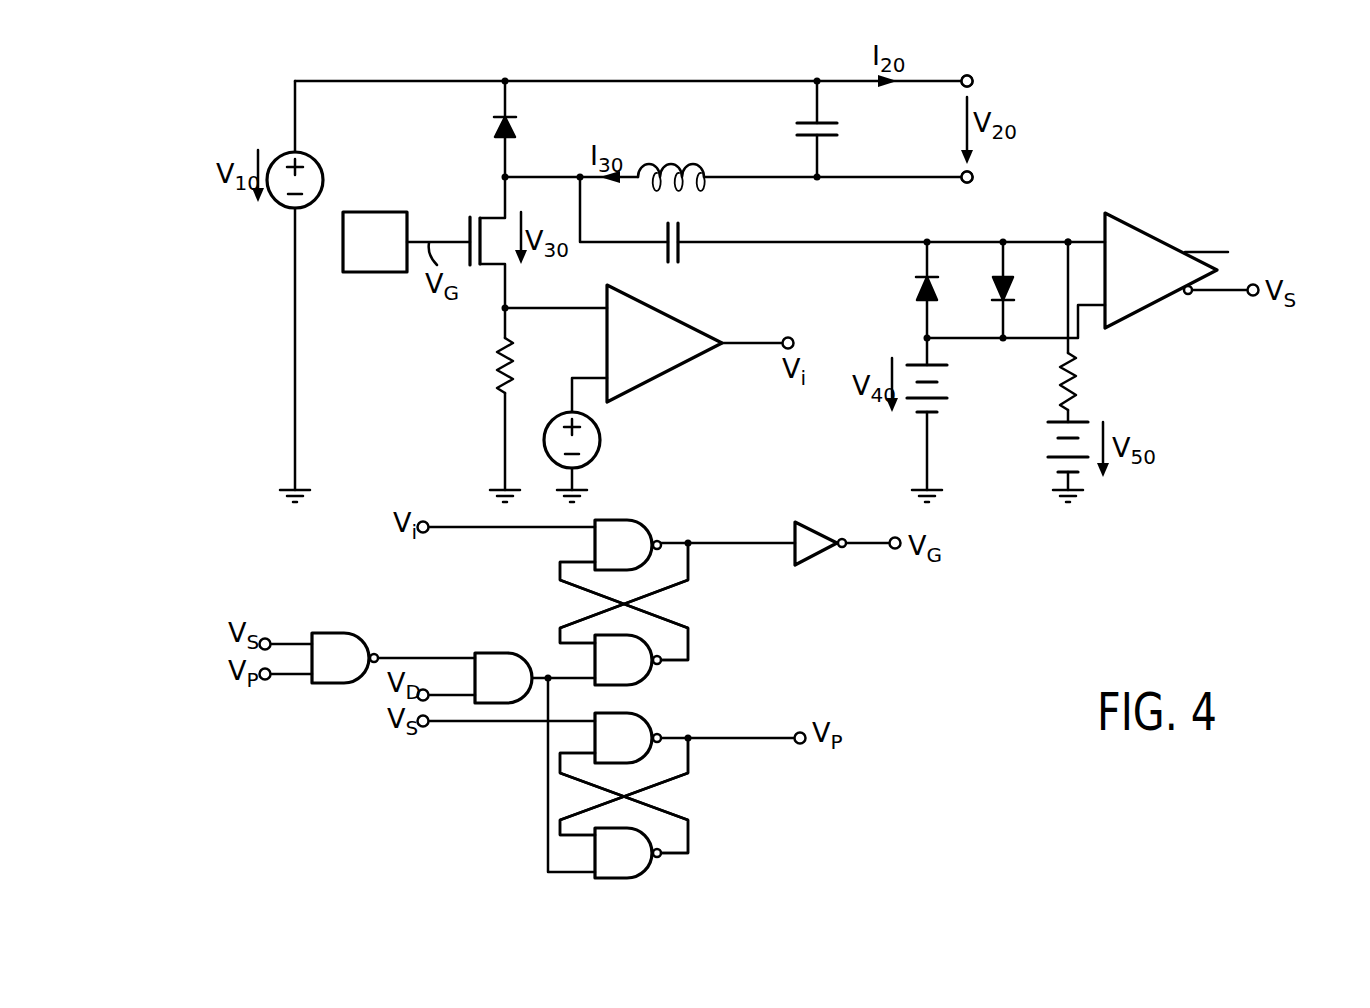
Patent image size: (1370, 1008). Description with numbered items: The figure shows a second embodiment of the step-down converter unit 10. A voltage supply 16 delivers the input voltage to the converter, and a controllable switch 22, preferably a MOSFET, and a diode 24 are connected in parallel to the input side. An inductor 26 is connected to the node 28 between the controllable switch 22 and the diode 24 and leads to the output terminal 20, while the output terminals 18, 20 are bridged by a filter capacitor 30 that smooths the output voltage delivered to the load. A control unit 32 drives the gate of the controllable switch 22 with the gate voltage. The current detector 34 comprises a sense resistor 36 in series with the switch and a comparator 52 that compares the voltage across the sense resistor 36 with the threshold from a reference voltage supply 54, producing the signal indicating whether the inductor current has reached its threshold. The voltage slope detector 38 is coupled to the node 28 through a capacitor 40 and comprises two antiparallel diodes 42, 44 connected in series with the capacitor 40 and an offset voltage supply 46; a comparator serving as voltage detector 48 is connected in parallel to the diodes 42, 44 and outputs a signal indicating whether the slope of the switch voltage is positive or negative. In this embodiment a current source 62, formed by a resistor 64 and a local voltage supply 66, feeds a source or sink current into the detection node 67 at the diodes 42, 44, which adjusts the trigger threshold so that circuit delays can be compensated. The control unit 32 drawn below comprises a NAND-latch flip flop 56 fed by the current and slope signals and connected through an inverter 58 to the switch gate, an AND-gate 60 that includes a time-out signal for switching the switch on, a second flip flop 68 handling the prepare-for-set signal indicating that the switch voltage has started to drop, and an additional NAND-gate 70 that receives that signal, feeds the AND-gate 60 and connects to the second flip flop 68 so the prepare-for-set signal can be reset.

The converter unit 10 is at (1130, 74).
The voltage supply 16 is at (320, 163).
The output terminal 18 is at (973, 78).
The output terminal 20 is at (973, 181).
The controllable switch 22 is at (466, 220).
The diode 24 is at (516, 127).
The inductor 26 is at (678, 164).
The node 28 is at (504, 176).
The filter capacitor 30 is at (825, 138).
The control unit 32 is at (362, 274).
The current detector 34 is at (666, 452).
The sense resistor 36 is at (496, 368).
The voltage slope detector 38 is at (1130, 482).
The capacitor 40 is at (680, 232).
The diode 42 is at (914, 296).
The diode 44 is at (1013, 285).
The offset voltage supply 46 is at (947, 388).
The voltage detector 48 is at (1130, 320).
The comparator 52 is at (672, 376).
The reference voltage supply 54 is at (594, 458).
The flip flop 56 is at (716, 679).
The inverter 58 is at (818, 556).
The AND-gate 60 is at (496, 652).
The current source 62 is at (1160, 422).
The resistor 64 is at (1058, 388).
The local voltage supply 66 is at (1046, 450).
The detection node 67 is at (1068, 240).
The second flip flop 68 is at (735, 852).
The NAND-gate 70 is at (336, 632).